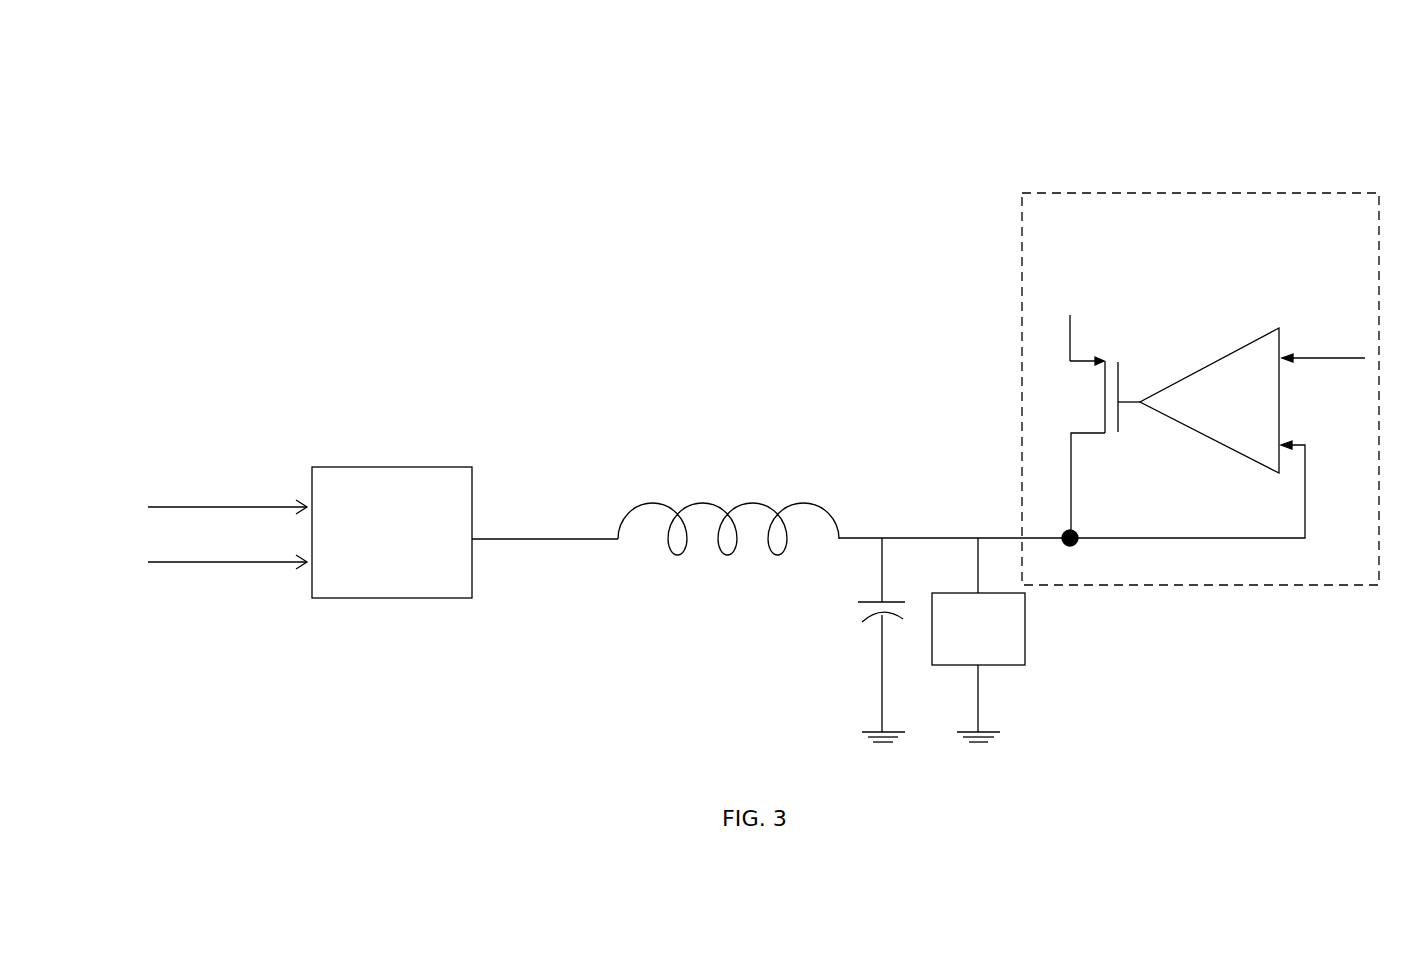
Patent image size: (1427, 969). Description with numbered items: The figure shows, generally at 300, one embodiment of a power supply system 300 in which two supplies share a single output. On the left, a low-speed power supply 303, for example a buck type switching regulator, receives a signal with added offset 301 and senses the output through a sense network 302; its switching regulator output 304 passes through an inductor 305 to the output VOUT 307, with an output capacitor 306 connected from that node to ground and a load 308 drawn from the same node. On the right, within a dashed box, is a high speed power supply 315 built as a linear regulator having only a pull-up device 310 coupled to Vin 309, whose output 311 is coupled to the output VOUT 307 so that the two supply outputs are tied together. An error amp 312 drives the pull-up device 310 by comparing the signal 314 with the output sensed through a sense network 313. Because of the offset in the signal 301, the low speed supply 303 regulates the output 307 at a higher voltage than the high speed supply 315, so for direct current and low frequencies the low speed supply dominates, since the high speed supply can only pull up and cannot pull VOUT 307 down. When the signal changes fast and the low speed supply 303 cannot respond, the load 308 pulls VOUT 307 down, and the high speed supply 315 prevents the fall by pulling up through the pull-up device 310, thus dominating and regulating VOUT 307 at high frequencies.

The power supply system 300 is at (946, 186).
The signal with added offset 301 is at (154, 507).
The sense network 302 is at (172, 565).
The low-speed power supply 303 is at (362, 467).
The switching regulator output 304 is at (534, 539).
The inductor 305 is at (697, 498).
The output capacitor 306 is at (862, 615).
The output VOUT 307 is at (890, 540).
The load 308 is at (1025, 630).
The Vin 309 is at (1067, 342).
The pull-up device 310 is at (1092, 356).
The output of pull-up device 311 is at (1068, 487).
The error amp 312 is at (1212, 360).
The sense network 313 is at (1307, 490).
The signal 314 is at (1312, 357).
The high speed power supply 315 is at (1175, 193).